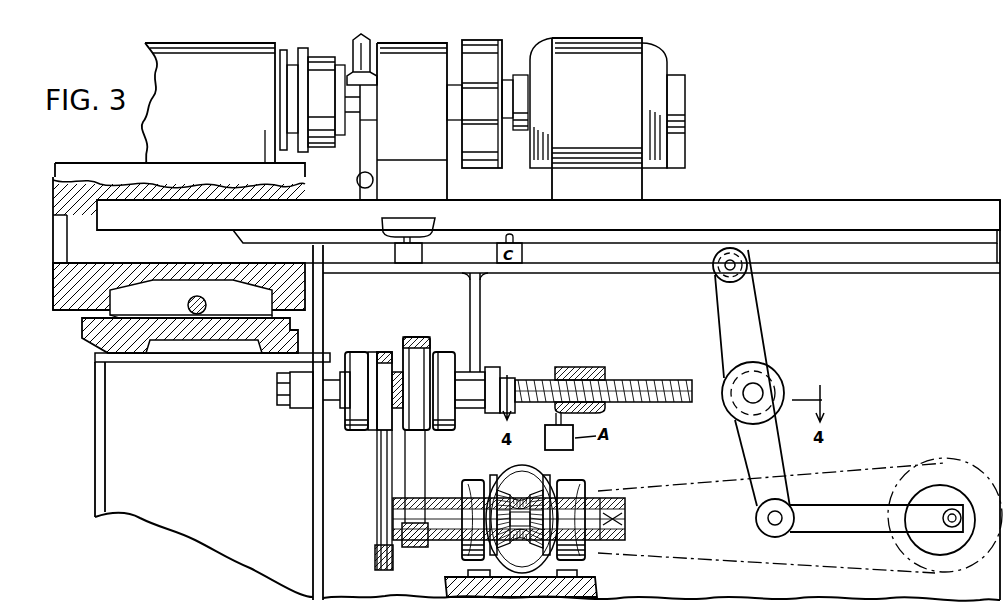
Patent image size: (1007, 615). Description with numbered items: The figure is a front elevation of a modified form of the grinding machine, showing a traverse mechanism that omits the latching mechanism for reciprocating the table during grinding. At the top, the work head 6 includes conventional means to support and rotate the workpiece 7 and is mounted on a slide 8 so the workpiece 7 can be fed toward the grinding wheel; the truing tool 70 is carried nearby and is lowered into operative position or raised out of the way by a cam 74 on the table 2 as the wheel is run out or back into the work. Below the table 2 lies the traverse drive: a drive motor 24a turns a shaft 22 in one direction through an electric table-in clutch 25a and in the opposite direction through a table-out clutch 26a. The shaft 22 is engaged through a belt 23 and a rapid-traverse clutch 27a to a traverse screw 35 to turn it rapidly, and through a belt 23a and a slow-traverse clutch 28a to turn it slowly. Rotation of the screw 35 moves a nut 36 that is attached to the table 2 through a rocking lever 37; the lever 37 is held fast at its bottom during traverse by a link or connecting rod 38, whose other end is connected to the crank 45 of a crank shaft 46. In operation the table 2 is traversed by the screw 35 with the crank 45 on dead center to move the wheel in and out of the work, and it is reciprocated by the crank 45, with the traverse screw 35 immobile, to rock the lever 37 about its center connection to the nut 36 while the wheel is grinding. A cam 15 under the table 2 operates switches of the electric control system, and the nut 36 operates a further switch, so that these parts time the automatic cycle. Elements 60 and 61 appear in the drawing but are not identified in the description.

The table 2 is at (719, 210).
The work head 6 is at (220, 110).
The workpiece 7 is at (341, 62).
The slide 8 is at (80, 270).
The cam 15 is at (415, 226).
The shaft 22 is at (627, 516).
The belt 23 is at (380, 446).
The belt 23a is at (414, 470).
The drive motor 24a is at (520, 478).
The table-in clutch 25a is at (463, 548).
The table-out clutch 26a is at (585, 555).
The rapid-traverse clutch 27a is at (357, 351).
The slow-traverse clutch 28a is at (443, 351).
The traverse screw 35 is at (535, 382).
The nut 36 is at (590, 370).
The rocking lever 37 is at (766, 356).
The connecting rod 38 is at (855, 512).
The crank 45 is at (951, 513).
The crank shaft 46 is at (913, 540).
The cam wheel 60 is at (945, 472).
The belt center line 61 is at (877, 470).
The truing tool 70 is at (363, 38).
The cam 74 is at (353, 191).